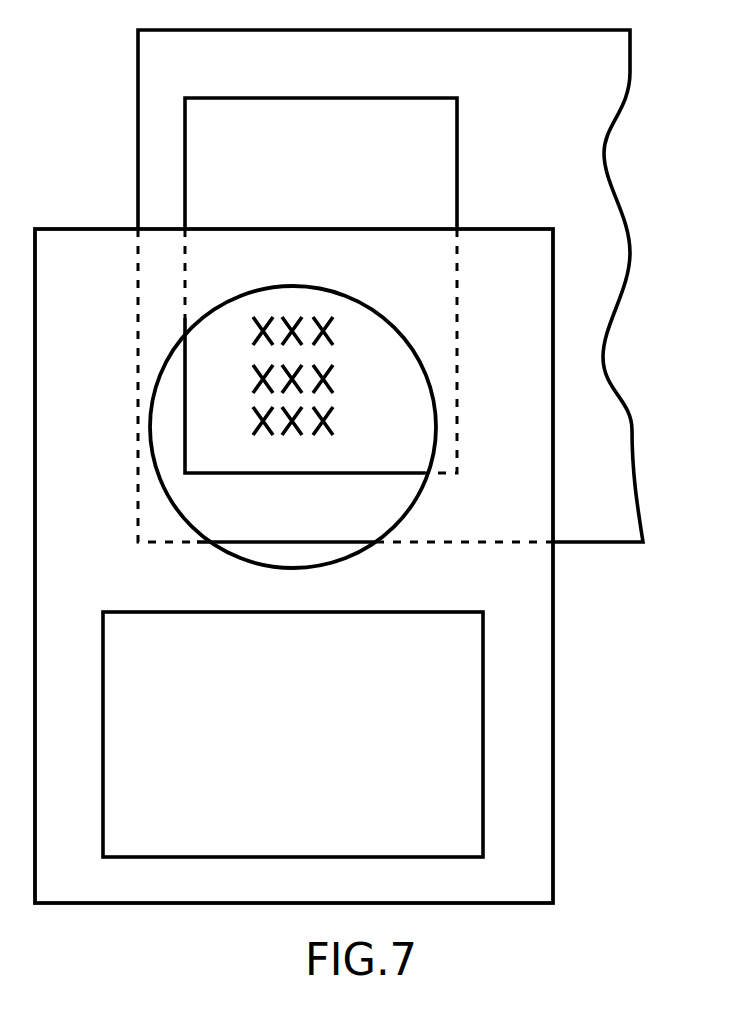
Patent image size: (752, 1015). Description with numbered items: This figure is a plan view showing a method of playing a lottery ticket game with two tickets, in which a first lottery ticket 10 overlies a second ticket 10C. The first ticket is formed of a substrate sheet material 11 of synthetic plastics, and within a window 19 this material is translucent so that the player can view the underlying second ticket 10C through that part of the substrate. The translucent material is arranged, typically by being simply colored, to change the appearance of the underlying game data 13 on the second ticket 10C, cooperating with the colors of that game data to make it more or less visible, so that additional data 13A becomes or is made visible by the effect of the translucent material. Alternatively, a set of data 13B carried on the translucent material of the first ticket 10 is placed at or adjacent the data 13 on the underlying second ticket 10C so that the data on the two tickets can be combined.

The lottery ticket 10 is at (522, 810).
The second ticket 10C is at (580, 530).
The substrate sheet material 11 is at (243, 542).
The lottery game indicia 13 is at (327, 317).
The additional data 13A is at (327, 380).
The set of data 13B is at (327, 417).
The window 19 is at (353, 552).